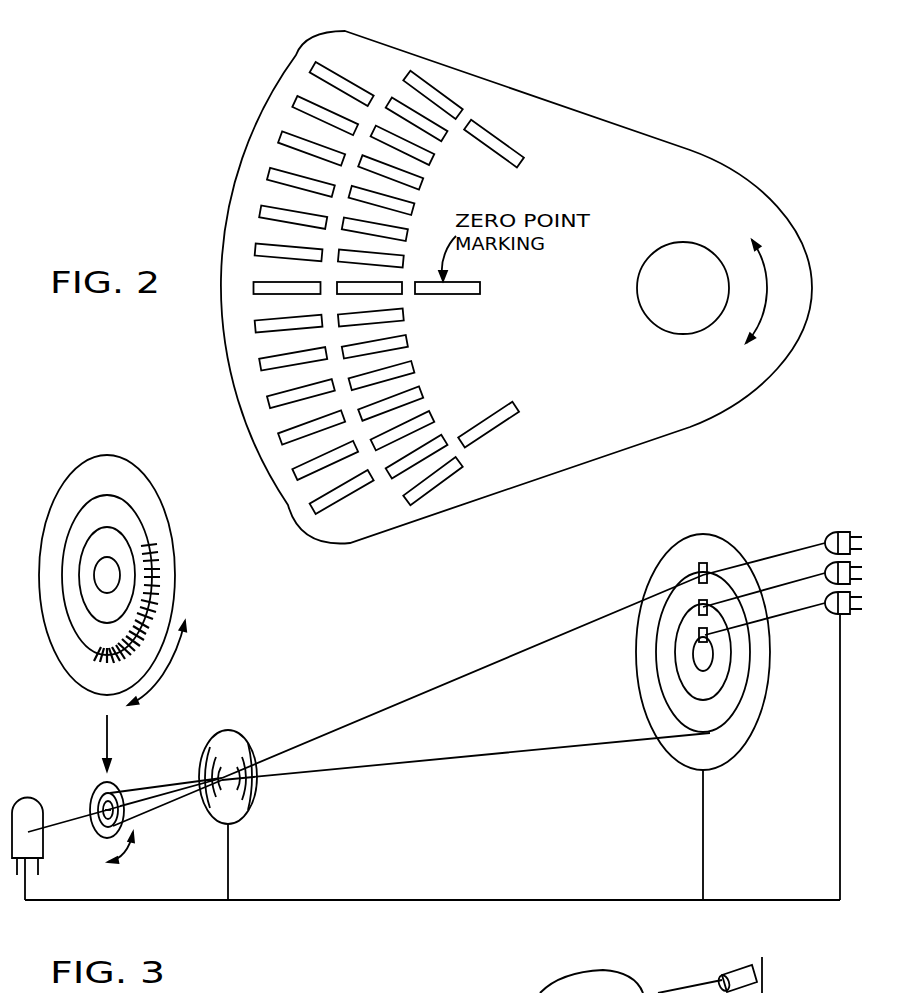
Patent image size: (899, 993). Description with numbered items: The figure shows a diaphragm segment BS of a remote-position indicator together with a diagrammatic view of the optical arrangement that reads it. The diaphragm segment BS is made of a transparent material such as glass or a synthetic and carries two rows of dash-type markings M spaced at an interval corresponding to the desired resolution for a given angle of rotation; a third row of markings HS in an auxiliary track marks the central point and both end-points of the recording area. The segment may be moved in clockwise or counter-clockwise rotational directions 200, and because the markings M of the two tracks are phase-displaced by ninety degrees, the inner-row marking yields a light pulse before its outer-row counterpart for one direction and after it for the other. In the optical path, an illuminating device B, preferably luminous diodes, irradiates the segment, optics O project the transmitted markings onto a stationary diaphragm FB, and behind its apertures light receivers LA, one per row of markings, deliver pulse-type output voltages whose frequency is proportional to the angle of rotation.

In FIG. 2, the rotational directions 200 is at (763, 265).
In FIG. 2, the dash-type markings M is at (343, 125).
In FIG. 2, the markings in auxiliary track HS is at (470, 128).
In FIG. 3, the illuminating device B is at (27, 867).
In FIG. 3, the diaphragm segment BS is at (112, 644).
In FIG. 3, the optics O is at (228, 834).
In FIG. 3, the stationary diaphragm FB is at (703, 736).
In FIG. 3, the light receivers LA is at (843, 735).